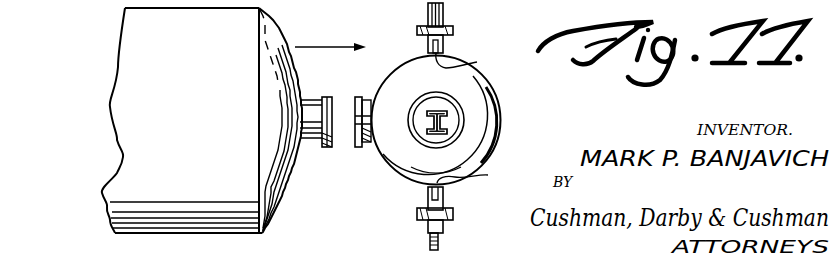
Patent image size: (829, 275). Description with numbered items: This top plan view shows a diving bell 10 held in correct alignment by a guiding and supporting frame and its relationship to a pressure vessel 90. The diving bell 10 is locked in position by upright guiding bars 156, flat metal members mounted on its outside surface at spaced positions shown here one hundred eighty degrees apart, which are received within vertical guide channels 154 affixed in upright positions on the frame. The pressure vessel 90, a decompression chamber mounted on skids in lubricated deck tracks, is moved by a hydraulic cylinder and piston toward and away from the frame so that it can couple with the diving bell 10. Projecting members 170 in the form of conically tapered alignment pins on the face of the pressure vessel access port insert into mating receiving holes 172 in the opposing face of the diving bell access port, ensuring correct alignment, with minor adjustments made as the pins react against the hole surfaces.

The pressure vessel 90 is at (157, 71).
The projecting members 170 is at (341, 80).
The receiving holes 172 is at (353, 96).
The diving bell 10 is at (487, 125).
The vertical guide channels 154 is at (446, 42).
The upright guiding bars 156 is at (482, 115).